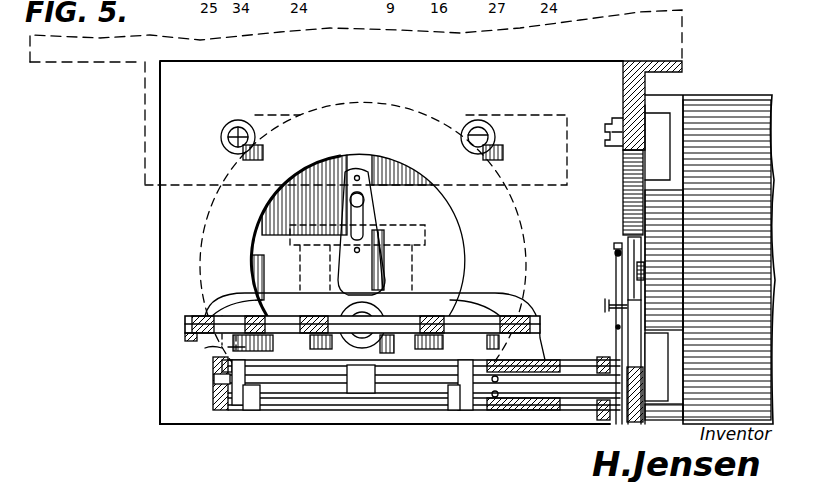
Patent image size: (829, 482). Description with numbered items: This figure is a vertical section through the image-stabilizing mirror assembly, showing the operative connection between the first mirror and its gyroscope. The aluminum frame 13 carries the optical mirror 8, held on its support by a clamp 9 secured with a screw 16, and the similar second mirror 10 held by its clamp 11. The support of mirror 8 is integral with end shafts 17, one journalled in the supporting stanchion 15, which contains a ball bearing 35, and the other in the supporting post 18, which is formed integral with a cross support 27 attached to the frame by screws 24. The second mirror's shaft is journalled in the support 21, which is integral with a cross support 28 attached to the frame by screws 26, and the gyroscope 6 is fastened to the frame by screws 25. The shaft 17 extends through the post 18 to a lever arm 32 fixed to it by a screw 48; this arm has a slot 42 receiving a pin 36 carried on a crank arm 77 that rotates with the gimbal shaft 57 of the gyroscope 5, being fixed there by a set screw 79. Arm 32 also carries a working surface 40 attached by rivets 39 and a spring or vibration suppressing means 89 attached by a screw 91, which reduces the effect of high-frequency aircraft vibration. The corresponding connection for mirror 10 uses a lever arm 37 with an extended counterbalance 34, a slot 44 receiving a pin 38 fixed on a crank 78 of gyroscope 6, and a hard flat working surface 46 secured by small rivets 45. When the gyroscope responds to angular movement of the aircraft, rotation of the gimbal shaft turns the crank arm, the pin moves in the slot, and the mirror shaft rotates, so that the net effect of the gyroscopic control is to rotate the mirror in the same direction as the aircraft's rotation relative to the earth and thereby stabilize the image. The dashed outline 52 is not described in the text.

The gyroscope 5 is at (735, 94).
The gyroscope 6 is at (192, 252).
The optical mirror 8 is at (347, 395).
The clamp 9 is at (244, 395).
The optical mirror 10 is at (426, 325).
The clamp 11 is at (222, 349).
The frame 13 is at (158, 426).
The supporting stanchion 15 is at (224, 412).
The screw 16 is at (256, 412).
The end shaft 17 is at (543, 390).
The supporting post 18 is at (528, 412).
The support 21 is at (388, 310).
The screw 24 is at (609, 128).
The screw 25 is at (235, 122).
The screw 26 is at (234, 316).
The cross support 27 is at (633, 192).
The cross support 28 is at (502, 297).
The lever arm 32 is at (616, 244).
The counterbalance 34 is at (362, 380).
The ball bearing 35 is at (216, 370).
The pin 36 is at (605, 305).
The lever arm 37 is at (388, 250).
The pin 38 is at (350, 203).
The rivet 39 is at (615, 252).
The working surface 40 is at (622, 286).
The slot 42 is at (616, 268).
The slot 44 is at (372, 218).
The rivet 45 is at (357, 168).
The working surface 46 is at (351, 219).
The screw 48 is at (624, 420).
The bracket 52 is at (292, 245).
The gimbal shaft 57 is at (645, 264).
The crank arm 77 is at (636, 247).
The crank 78 is at (381, 266).
The set screw 79 is at (631, 237).
The spring or vibration suppressing means 89 is at (628, 298).
The screw 91 is at (625, 358).